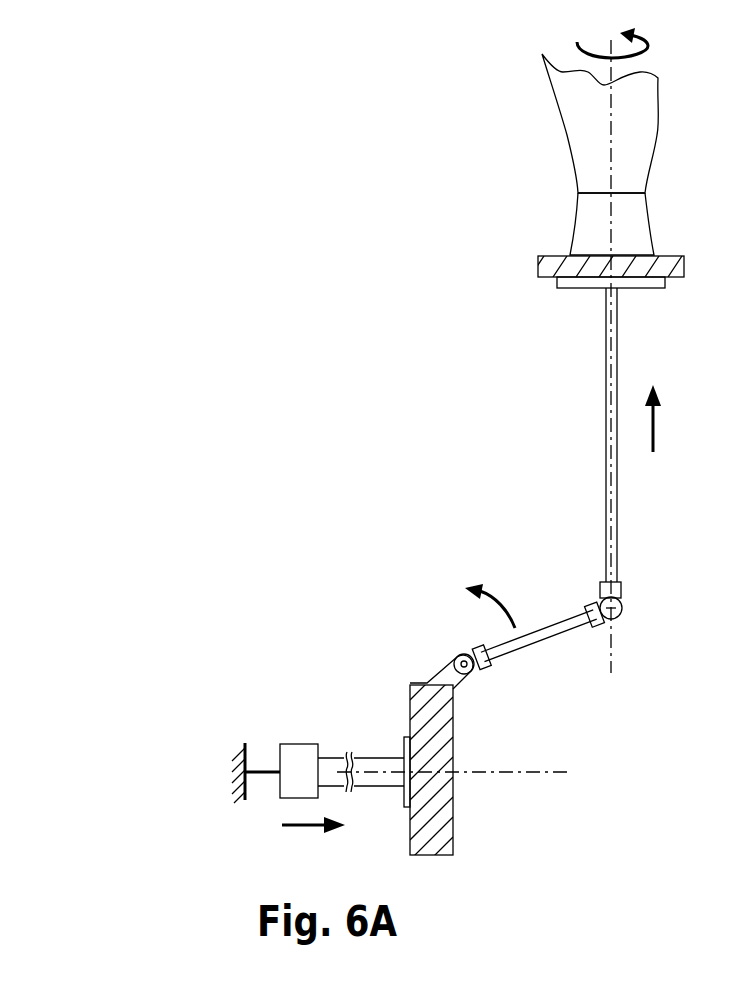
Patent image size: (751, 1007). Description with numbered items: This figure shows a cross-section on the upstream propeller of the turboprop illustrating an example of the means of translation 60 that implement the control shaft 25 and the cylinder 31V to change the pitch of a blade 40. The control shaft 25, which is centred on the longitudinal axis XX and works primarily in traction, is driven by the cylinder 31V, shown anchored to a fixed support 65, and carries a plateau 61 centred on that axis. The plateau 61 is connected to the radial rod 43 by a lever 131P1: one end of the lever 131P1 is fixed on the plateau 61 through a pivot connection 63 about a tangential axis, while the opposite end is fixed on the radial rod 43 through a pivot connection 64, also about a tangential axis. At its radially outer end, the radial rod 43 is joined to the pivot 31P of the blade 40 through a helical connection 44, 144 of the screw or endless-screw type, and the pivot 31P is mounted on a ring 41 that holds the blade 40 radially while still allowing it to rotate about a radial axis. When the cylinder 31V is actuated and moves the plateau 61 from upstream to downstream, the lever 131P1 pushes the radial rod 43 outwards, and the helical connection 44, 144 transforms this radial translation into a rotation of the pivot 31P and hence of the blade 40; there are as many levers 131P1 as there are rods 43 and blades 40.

The blade 40 is at (568, 153).
The helical connection 44 is at (585, 226).
The helical connection 144 is at (545, 224).
The pivot 31P is at (628, 222).
The ring 41 is at (510, 265).
The radial rod 43 is at (605, 403).
The pivot connection 64 is at (622, 608).
The lever 131P1 is at (555, 623).
The pivot connection 63 is at (457, 662).
The plateau 61 is at (408, 713).
The control shaft 25 is at (382, 778).
The cylinder 31V is at (300, 760).
The fixed support 65 is at (238, 747).
The means of translation 60 is at (490, 506).
The axis XX is at (517, 773).